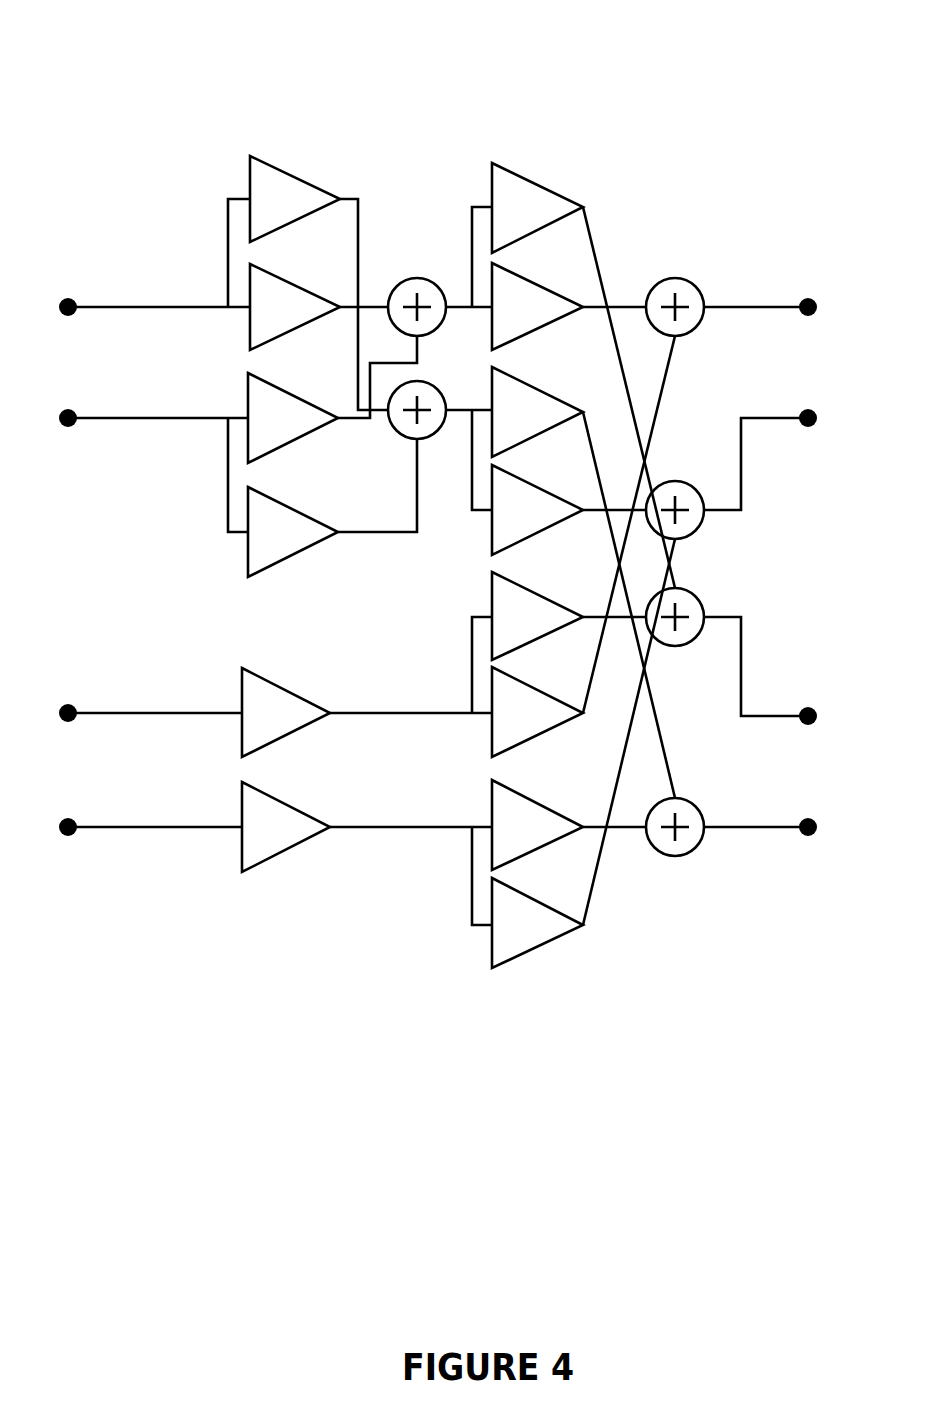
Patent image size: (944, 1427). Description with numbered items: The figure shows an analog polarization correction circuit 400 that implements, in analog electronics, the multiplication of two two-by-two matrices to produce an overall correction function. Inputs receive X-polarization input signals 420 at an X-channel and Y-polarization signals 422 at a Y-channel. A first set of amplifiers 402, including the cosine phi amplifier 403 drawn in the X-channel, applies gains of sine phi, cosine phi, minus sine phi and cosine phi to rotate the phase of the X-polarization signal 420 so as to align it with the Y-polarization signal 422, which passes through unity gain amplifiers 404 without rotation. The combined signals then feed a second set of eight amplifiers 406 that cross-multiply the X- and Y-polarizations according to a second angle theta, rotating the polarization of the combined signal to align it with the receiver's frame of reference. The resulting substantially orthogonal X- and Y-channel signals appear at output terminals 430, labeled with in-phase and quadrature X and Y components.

The analog polarization correction circuit 400 is at (302, 27).
The amplifiers 402 is at (292, 172).
The cosine multiplier 403 is at (243, 323).
The unity gain amplifier 404 is at (280, 688).
The amplifiers 406 is at (538, 186).
The X-polarization input signal 420 is at (128, 305).
The Y-polarization signal 422 is at (143, 712).
The output terminals 430 is at (796, 240).